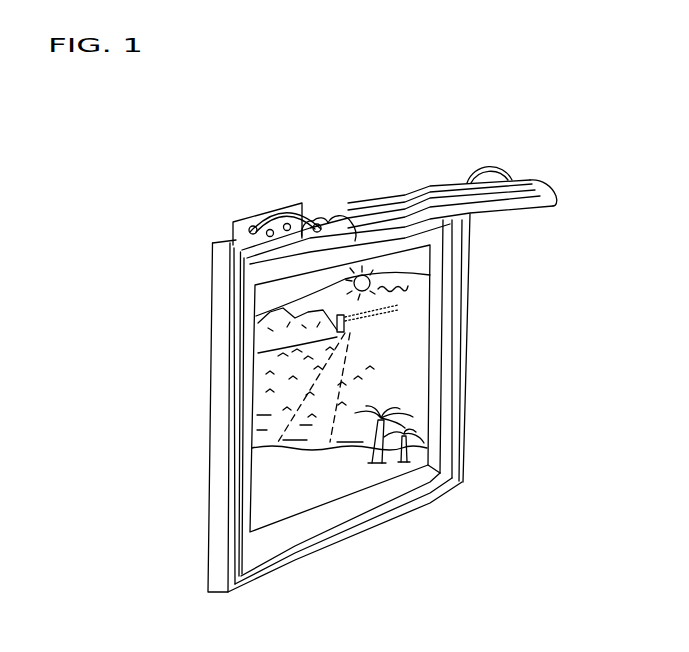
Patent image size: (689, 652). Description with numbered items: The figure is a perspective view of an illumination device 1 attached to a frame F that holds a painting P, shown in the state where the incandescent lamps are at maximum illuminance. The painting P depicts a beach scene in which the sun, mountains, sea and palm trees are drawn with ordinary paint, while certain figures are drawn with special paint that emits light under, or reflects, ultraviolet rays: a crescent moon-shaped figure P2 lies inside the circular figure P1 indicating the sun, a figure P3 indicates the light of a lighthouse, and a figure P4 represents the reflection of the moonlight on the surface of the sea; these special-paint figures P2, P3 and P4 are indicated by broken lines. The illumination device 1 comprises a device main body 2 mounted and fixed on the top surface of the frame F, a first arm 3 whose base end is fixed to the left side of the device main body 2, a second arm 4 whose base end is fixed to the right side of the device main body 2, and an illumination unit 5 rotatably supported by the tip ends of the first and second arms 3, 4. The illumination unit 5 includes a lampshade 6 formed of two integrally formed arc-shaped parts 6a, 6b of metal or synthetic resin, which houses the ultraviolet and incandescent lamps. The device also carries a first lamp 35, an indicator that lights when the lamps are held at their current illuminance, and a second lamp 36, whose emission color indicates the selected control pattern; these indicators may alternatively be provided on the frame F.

The illumination device 1 is at (197, 153).
The device main body 2 is at (414, 186).
The first arm 3 is at (284, 203).
The first lamp 35 is at (250, 227).
The second lamp 36 is at (267, 230).
The second arm 4 is at (490, 166).
The illumination unit 5 is at (547, 192).
The lampshade 6 is at (333, 182).
The arc-shaped part 6a is at (323, 218).
The arc-shaped part 6b is at (352, 219).
The frame F is at (463, 305).
The painting P is at (412, 373).
The circular figure P1 is at (430, 275).
The crescent moon-shaped figure P2 is at (337, 319).
The light of a light house P3 is at (345, 323).
The figure of moonlight reflection P4 is at (420, 442).